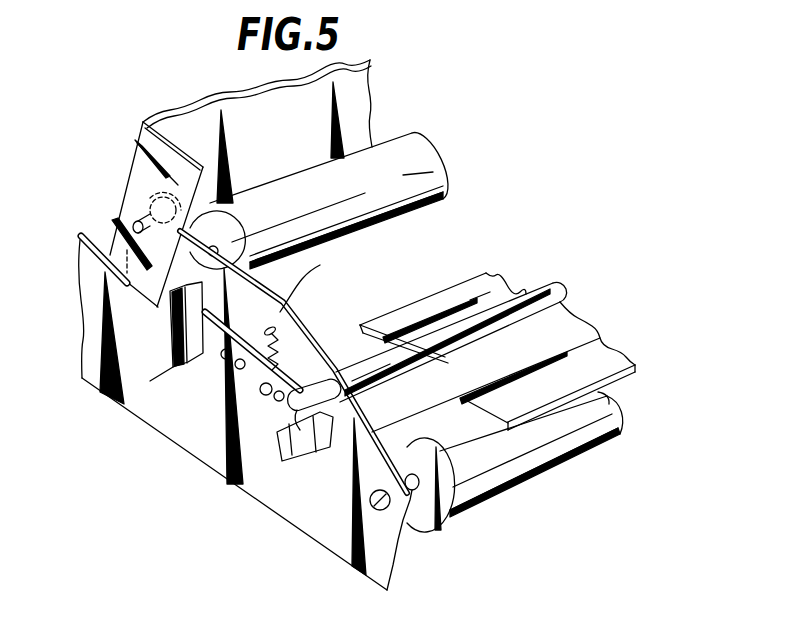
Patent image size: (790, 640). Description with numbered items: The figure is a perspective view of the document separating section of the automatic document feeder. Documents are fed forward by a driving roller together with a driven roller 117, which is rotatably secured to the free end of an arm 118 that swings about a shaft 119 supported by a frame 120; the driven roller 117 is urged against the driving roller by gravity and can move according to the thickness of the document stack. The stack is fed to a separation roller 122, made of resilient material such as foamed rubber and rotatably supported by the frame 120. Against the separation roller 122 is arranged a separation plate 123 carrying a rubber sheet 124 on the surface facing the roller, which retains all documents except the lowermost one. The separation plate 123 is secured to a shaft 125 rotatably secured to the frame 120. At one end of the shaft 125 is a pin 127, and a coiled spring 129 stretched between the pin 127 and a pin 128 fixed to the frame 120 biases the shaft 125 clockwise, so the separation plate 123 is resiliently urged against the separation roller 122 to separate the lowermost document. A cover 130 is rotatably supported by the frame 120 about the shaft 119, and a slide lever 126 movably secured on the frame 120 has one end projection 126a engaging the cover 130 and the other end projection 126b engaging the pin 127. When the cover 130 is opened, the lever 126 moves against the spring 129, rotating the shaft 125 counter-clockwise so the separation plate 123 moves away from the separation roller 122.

The driven roller 117 is at (385, 152).
The arm 118 is at (237, 197).
The shaft 119 is at (128, 224).
The frame 120 is at (282, 310).
The separation roller 122 is at (497, 478).
The separation plate 123 is at (490, 280).
The rubber sheet 124 is at (558, 412).
The shaft 125 is at (380, 364).
The lever 126 is at (227, 432).
The one end projection 126a is at (170, 368).
The other end projection 126b is at (300, 432).
The pin 127 is at (317, 440).
The pin 128 is at (284, 325).
The coiled spring 129 is at (287, 362).
The cover 130 is at (136, 167).